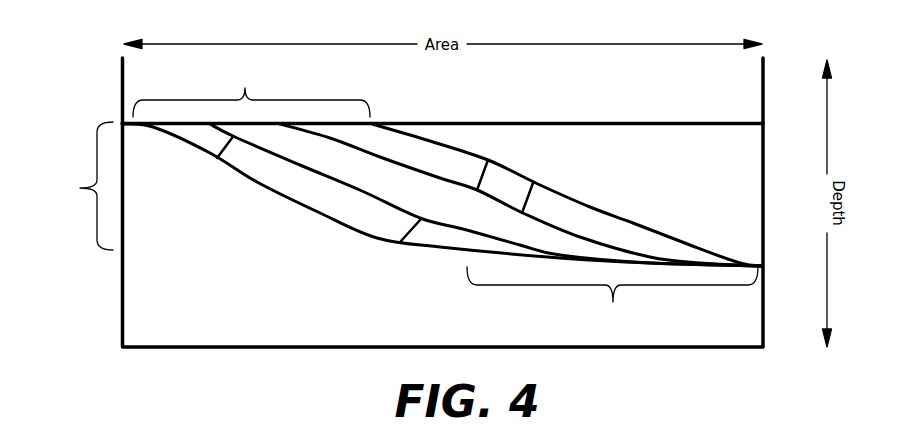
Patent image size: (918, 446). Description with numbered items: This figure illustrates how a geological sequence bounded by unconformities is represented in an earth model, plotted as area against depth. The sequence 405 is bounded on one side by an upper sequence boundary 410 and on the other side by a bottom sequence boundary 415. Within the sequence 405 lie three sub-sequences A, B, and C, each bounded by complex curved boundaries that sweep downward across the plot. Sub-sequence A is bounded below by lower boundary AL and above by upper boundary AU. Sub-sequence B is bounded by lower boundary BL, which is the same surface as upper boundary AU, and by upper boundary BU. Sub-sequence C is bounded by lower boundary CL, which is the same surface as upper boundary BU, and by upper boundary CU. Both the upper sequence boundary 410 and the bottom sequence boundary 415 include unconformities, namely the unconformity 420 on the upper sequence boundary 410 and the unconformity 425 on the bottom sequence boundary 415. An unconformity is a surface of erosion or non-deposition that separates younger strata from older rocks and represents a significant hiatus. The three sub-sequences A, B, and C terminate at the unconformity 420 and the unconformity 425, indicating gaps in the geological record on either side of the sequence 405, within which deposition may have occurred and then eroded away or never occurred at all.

The sequence 405 is at (77, 186).
The upper sequence boundary 410 is at (632, 222).
The bottom sequence boundary 415 is at (317, 214).
The unconformity 420 is at (251, 91).
The unconformity 425 is at (612, 298).
The upper boundary AU is at (217, 159).
The lower boundary AL is at (253, 183).
The upper boundary BU is at (487, 161).
The lower boundary BL is at (400, 241).
The upper boundary CU is at (591, 205).
The lower boundary CL is at (534, 184).
The sub-sequence A is at (362, 208).
The sub-sequence B is at (402, 188).
The sub-sequence C is at (443, 162).